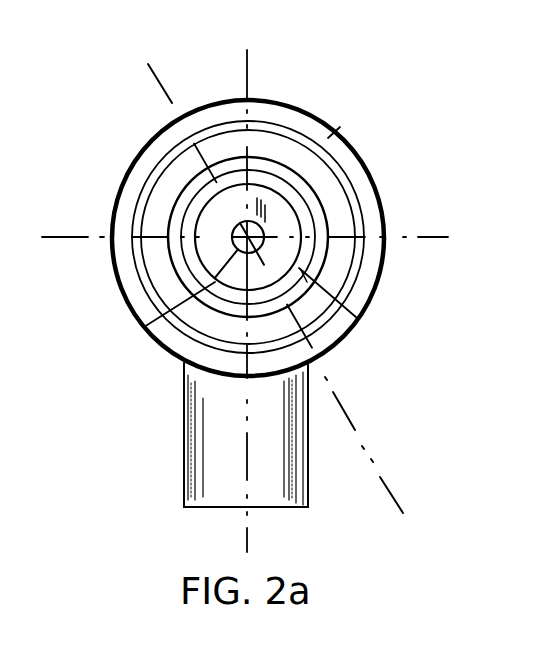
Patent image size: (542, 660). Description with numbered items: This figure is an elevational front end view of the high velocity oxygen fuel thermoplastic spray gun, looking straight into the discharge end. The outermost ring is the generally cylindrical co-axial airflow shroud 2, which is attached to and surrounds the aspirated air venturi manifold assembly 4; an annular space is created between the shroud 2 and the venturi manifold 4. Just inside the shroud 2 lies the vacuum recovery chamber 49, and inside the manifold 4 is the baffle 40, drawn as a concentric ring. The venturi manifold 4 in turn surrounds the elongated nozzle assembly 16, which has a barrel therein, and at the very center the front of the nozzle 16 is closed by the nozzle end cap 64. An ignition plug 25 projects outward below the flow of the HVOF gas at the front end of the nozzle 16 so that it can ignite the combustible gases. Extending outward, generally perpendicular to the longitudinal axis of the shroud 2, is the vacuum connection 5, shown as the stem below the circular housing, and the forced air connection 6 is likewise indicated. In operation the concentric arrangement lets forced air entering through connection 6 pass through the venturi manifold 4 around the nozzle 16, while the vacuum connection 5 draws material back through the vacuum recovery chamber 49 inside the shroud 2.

The co-axial airflow shroud 2 is at (273, 98).
The venturi manifold assembly 4 is at (198, 65).
The vacuum connection 5 is at (127, 95).
The forced air connection 6 is at (55, 272).
The nozzle assembly 16 is at (357, 318).
The ignition plug 25 is at (144, 327).
The baffle 40 is at (303, 272).
The vacuum recovery chamber 49 is at (335, 132).
The nozzle end cap 64 is at (285, 230).